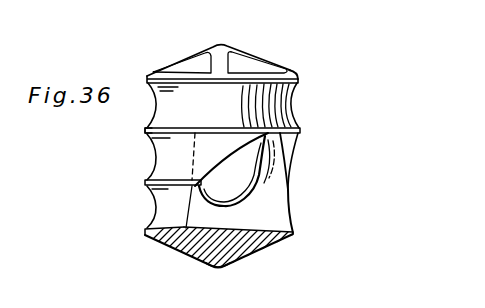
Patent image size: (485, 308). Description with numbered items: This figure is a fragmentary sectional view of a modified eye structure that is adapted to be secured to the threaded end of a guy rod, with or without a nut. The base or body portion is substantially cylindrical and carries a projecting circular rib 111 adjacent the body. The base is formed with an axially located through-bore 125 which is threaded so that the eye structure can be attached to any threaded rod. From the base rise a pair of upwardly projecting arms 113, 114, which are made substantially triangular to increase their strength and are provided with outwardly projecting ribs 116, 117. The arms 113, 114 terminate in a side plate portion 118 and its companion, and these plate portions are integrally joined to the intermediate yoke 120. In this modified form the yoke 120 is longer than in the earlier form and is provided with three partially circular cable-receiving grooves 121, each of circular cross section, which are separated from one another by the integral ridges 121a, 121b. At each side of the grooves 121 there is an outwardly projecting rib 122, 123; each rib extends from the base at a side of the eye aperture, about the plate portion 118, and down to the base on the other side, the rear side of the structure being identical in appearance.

The projecting circular rib 111 is at (297, 179).
The upwardly projecting arm 113 is at (233, 258).
The upwardly projecting arm 114 is at (240, 61).
The outwardly projecting rib 116 is at (223, 48).
The outwardly projecting rib 117 is at (214, 258).
The side plate portion 118 is at (276, 72).
The intermediate yoke 120 is at (151, 92).
The cable-receiving groove 121 is at (300, 127).
The integral ridge 121a is at (146, 130).
The integral ridge 121b is at (151, 181).
The outwardly projecting rib 122 is at (292, 78).
The outwardly projecting rib 123 is at (146, 231).
The through-bore 125 is at (234, 124).